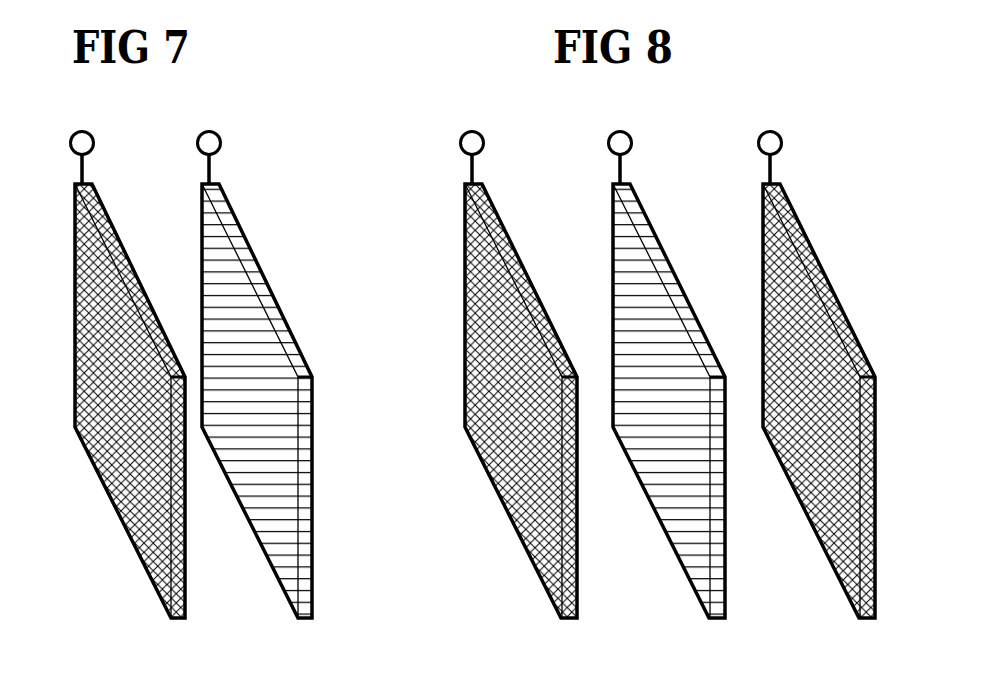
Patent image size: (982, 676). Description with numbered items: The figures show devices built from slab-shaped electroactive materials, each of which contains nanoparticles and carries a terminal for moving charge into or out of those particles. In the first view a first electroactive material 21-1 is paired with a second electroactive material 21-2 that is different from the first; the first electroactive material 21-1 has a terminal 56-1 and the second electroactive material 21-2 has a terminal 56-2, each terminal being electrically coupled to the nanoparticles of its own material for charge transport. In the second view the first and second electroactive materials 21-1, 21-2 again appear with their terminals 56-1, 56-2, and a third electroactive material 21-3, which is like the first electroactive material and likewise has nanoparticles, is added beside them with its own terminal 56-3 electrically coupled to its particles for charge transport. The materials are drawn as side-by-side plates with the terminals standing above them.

In FIG. 7, the first electroactive material 21-1 is at (150, 555).
In FIG. 8, the first electroactive material 21-1 is at (537, 548).
In FIG. 7, the second electroactive material 21-2 is at (300, 556).
In FIG. 8, the second electroactive material 21-2 is at (680, 532).
In FIG. 8, the third electroactive material 21-3 is at (828, 532).
In FIG. 7, the terminal 56-1 is at (93, 142).
In FIG. 8, the terminal 56-1 is at (483, 142).
In FIG. 7, the terminal 56-2 is at (219, 143).
In FIG. 8, the terminal 56-2 is at (632, 143).
In FIG. 8, the terminal 56-3 is at (782, 142).